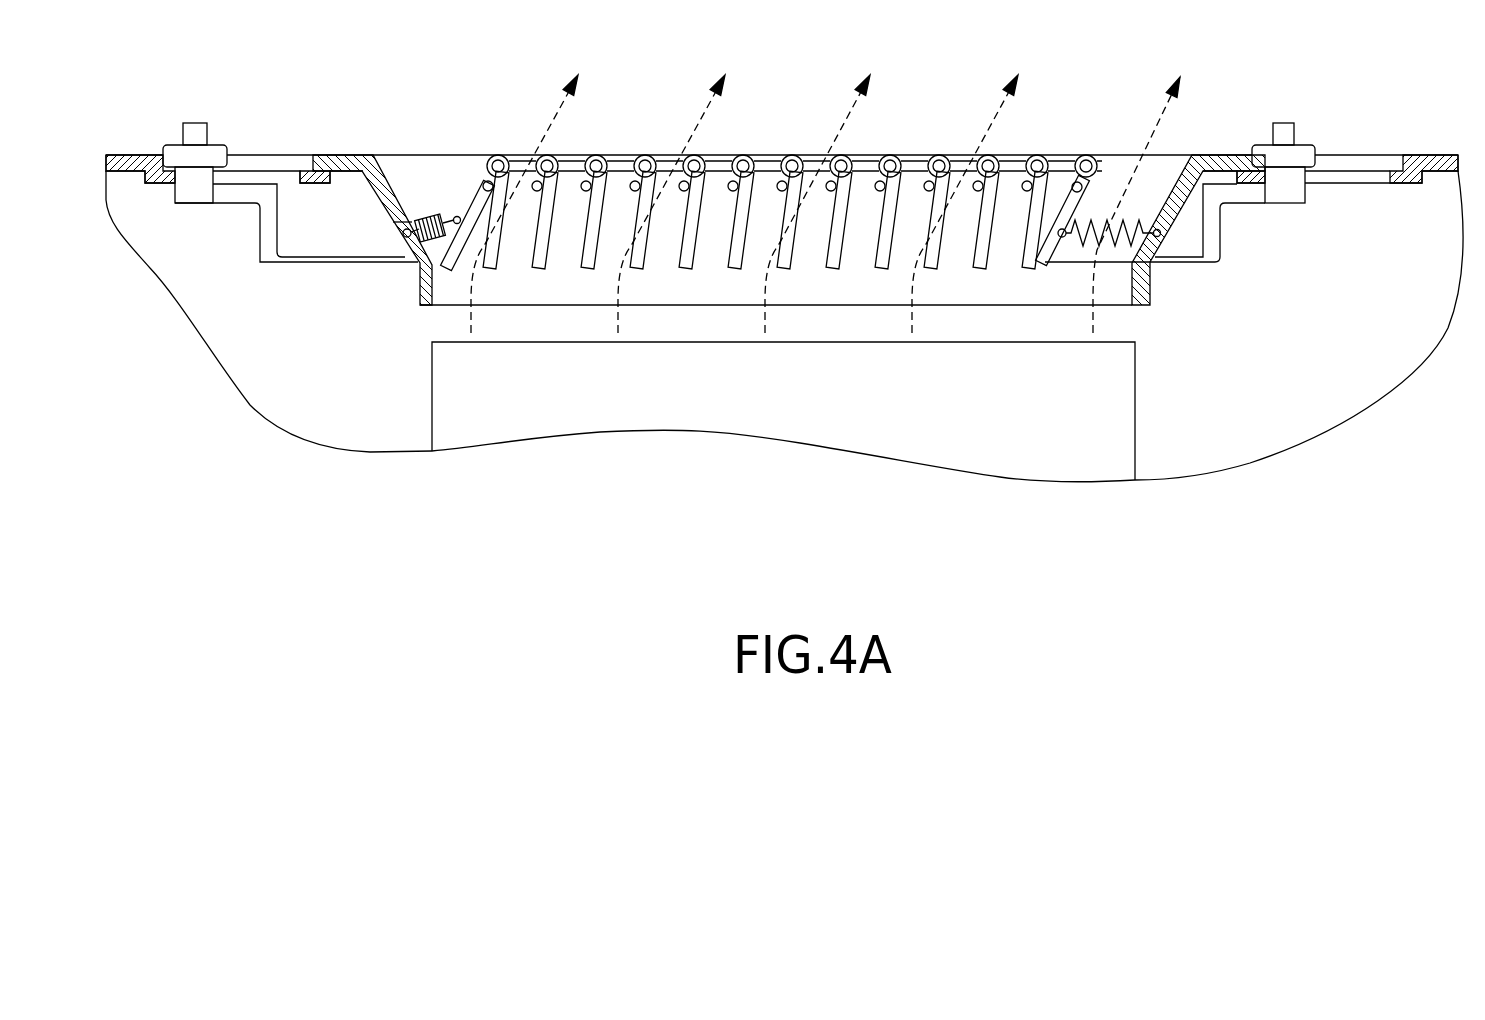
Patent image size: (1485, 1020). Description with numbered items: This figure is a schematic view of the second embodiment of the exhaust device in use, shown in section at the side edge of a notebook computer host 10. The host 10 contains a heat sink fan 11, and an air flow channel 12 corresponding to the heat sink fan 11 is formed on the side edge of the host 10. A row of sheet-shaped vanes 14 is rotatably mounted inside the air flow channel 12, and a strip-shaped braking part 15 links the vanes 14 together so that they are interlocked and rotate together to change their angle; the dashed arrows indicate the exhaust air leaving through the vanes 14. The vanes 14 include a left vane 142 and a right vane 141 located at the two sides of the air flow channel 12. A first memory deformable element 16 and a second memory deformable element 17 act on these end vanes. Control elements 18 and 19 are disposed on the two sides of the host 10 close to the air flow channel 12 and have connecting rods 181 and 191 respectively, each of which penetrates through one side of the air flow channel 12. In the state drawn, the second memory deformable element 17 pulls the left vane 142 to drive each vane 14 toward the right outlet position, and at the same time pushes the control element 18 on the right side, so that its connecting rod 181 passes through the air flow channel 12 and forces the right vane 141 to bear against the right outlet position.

The host 10 is at (1425, 155).
The heat sink fan 11 is at (1120, 416).
The air flow channel 12 is at (409, 190).
The vanes 14 is at (617, 192).
The right vane 141 is at (1078, 209).
The left vane 142 is at (466, 196).
The braking part 15 is at (1017, 162).
The first memory deformable element 16 is at (1135, 225).
The second memory deformable element 17 is at (428, 214).
The control element 18 is at (1300, 148).
The connecting rod 181 is at (1182, 262).
The control element 19 is at (178, 150).
The connecting rod 191 is at (340, 260).